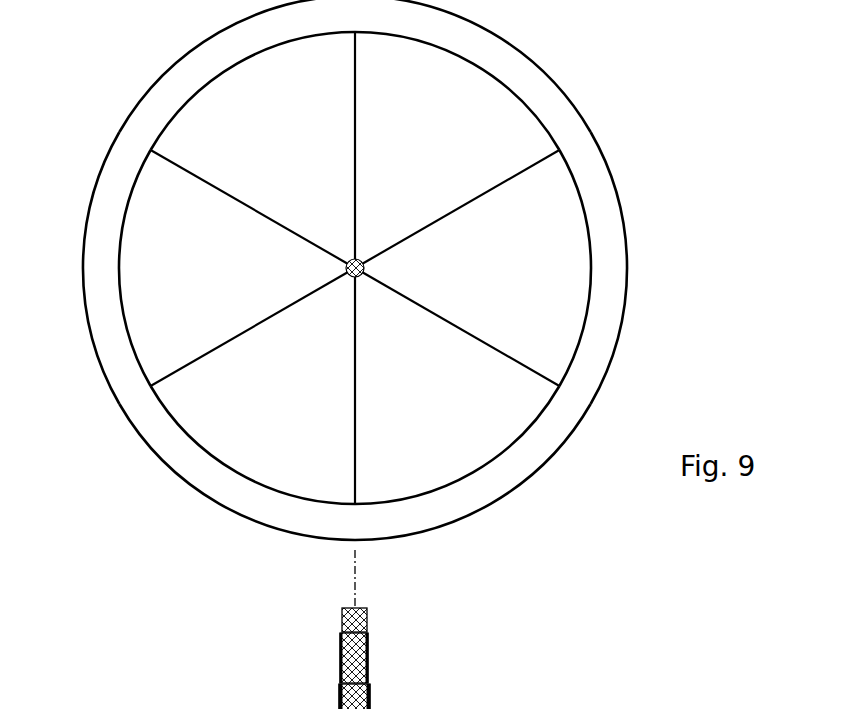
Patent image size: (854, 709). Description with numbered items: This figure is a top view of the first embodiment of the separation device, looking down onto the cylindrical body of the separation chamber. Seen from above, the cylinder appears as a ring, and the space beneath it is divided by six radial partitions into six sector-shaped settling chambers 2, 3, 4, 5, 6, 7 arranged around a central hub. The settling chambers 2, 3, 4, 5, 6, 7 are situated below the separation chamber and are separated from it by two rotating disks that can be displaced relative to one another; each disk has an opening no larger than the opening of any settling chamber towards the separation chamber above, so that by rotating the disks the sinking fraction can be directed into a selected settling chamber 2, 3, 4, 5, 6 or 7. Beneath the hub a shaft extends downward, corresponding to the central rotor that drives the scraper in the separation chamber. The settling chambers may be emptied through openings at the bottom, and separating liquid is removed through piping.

The settling chamber 2 is at (471, 70).
The settling chamber 3 is at (582, 267).
The settling chamber 4 is at (470, 462).
The settling chamber 5 is at (240, 70).
The settling chamber 6 is at (128, 270).
The settling chamber 7 is at (245, 463).